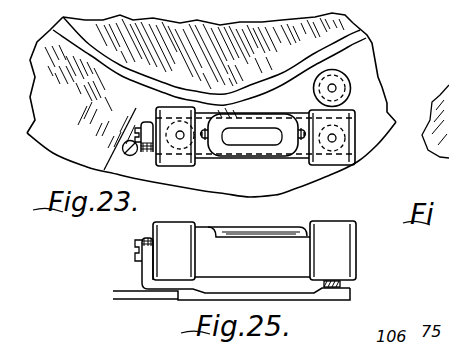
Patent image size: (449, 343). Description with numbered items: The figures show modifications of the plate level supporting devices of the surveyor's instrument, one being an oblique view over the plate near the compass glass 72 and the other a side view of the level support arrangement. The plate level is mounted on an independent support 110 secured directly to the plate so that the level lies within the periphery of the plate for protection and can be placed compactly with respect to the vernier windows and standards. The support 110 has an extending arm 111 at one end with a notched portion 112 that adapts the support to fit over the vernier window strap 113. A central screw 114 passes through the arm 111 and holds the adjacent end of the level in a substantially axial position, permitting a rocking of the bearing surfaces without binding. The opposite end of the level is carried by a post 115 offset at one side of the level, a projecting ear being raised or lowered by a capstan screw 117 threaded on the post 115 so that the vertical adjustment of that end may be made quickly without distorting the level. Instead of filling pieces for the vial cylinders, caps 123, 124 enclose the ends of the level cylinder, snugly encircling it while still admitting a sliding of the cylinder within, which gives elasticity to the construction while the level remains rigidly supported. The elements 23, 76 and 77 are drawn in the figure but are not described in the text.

In FIG. 23, the hose coupling ring assembly 23 is at (355, 40).
In FIG. 23, the glass 72 is at (211, 107).
In FIG. 23, the capsule / cartridge 76 is at (255, 140).
In FIG. 25, the capsule / cartridge 76 is at (257, 231).
In FIG. 25, the cylindrical body 77 is at (252, 252).
In FIG. 25, the support 110 is at (192, 292).
In FIG. 23, the extending arm 111 is at (144, 156).
In FIG. 25, the extending arm 111 is at (147, 267).
In FIG. 25, the notched portion 112 is at (160, 292).
In FIG. 23, the vernier window strap 113 is at (104, 168).
In FIG. 23, the central screw 114 is at (134, 133).
In FIG. 25, the central screw 114 is at (134, 246).
In FIG. 25, the post 115 is at (343, 285).
In FIG. 23, the capstan screw 117 is at (343, 81).
In FIG. 23, the cap 123 is at (341, 155).
In FIG. 25, the cap 123 is at (341, 231).
In FIG. 23, the cap 124 is at (185, 159).
In FIG. 25, the cap 124 is at (175, 233).